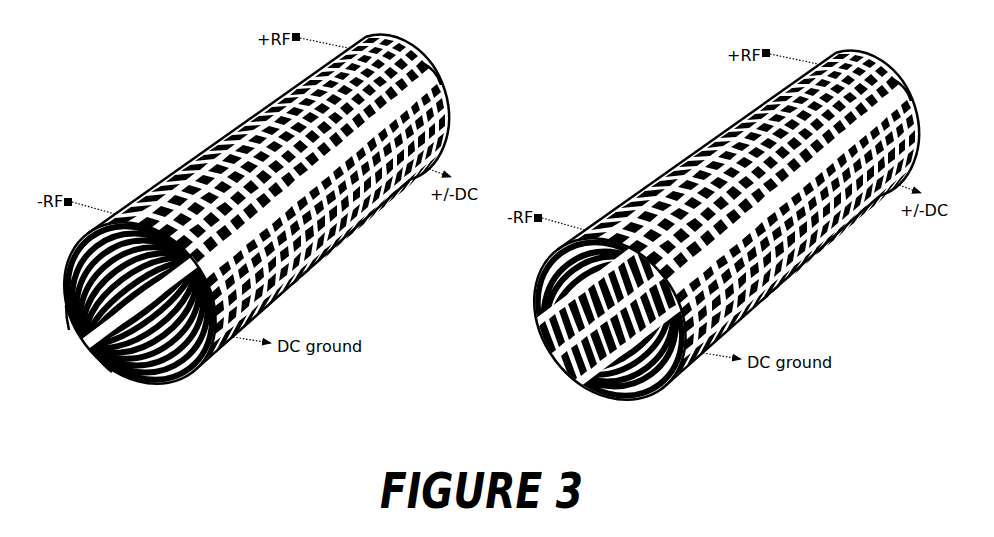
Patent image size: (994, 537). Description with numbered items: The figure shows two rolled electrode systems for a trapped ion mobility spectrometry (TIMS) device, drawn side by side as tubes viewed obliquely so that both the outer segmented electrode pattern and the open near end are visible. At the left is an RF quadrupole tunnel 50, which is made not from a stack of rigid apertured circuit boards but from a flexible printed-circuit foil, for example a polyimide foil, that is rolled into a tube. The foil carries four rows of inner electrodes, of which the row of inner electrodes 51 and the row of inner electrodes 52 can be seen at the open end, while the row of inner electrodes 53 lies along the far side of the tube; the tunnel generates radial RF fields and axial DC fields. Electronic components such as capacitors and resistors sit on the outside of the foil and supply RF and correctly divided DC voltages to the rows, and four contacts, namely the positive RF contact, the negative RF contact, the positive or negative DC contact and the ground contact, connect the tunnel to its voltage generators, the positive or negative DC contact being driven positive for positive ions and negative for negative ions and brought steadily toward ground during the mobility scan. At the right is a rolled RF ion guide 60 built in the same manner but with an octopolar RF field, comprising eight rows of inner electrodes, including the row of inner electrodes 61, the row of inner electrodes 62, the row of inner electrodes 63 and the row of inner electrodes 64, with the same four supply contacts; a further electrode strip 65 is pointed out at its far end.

The RF quadrupole tunnel 50 is at (241, 224).
The row of inner electrodes 51 is at (79, 318).
The row of inner electrodes 52 is at (108, 361).
The row of inner electrodes 53 is at (441, 85).
The rolled RF ion guide 60 is at (720, 220).
The row of inner electrodes 61 is at (545, 280).
The row of inner electrodes 62 is at (550, 334).
The row of inner electrodes 63 is at (578, 377).
The row of inner electrodes 64 is at (620, 396).
The DC electrode strip 65 is at (911, 101).